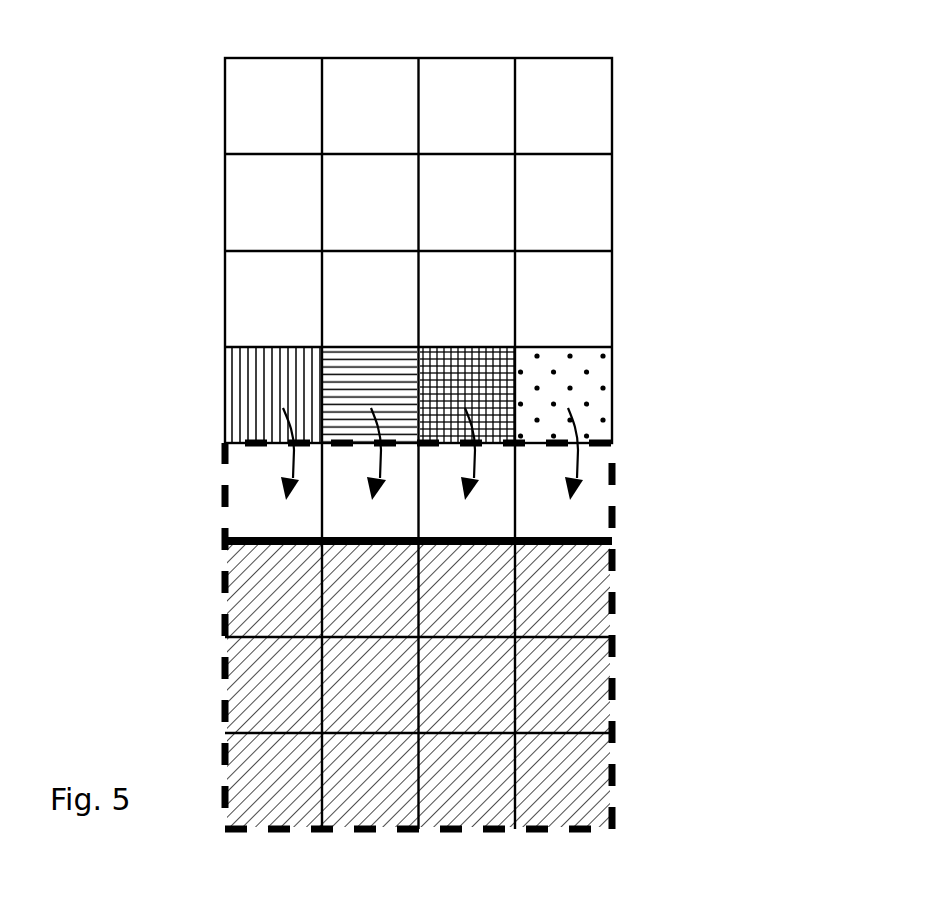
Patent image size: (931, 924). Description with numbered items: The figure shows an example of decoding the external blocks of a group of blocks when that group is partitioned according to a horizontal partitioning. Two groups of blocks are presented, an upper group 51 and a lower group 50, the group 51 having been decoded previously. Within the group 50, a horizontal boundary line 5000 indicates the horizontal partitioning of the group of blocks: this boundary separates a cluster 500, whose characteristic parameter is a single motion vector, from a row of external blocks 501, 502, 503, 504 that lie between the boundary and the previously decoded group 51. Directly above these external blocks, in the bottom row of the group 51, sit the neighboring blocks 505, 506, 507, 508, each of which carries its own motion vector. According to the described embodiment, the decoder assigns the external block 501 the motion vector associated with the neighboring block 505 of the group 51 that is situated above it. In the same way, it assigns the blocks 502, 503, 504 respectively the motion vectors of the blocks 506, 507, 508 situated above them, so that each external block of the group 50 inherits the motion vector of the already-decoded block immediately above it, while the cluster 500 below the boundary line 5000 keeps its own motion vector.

The group of blocks 51 is at (627, 60).
The group of blocks 50 is at (627, 448).
The cluster 500 is at (567, 780).
The horizontal boundary line 5000 is at (253, 550).
The external block 501 is at (256, 519).
The external block 502 is at (345, 473).
The external block 503 is at (490, 462).
The external block 504 is at (585, 510).
The neighboring block 505 is at (255, 385).
The block 506 is at (360, 363).
The block 507 is at (480, 366).
The block 508 is at (575, 380).